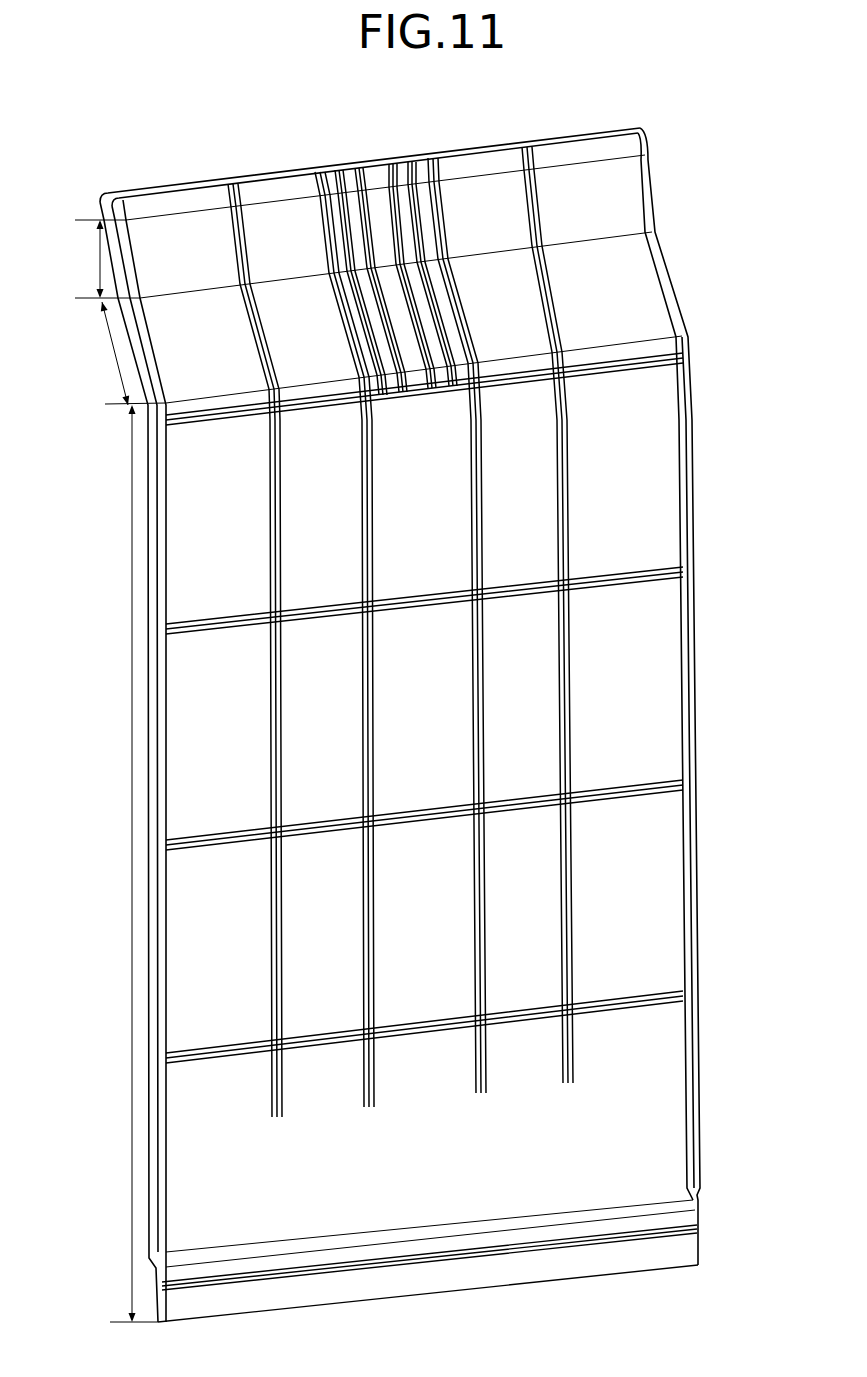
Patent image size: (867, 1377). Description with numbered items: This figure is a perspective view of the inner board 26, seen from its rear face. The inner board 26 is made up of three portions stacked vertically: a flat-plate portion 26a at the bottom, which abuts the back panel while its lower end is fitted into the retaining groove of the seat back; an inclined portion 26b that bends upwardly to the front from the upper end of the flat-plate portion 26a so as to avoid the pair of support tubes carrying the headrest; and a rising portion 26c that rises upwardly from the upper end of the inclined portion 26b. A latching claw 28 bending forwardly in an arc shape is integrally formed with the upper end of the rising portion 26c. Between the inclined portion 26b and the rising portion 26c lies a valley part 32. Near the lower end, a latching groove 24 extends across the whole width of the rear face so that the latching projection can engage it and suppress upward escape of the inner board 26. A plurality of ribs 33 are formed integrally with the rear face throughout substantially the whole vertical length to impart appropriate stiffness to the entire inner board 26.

The latching groove 24 is at (402, 1265).
The inner board 26 is at (706, 681).
The flat-plate portion 26a is at (130, 860).
The inclined portion 26b is at (112, 347).
The rising portion 26c is at (100, 250).
The latching claw 28 is at (108, 187).
The valley part 32 is at (602, 277).
The ribs 33 is at (350, 320).